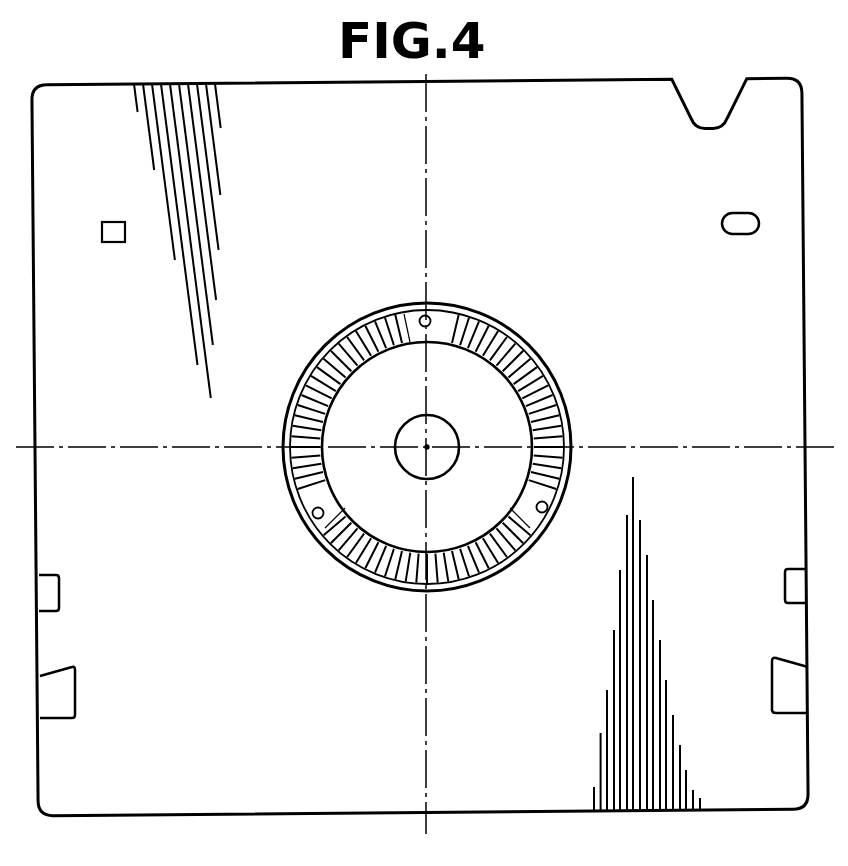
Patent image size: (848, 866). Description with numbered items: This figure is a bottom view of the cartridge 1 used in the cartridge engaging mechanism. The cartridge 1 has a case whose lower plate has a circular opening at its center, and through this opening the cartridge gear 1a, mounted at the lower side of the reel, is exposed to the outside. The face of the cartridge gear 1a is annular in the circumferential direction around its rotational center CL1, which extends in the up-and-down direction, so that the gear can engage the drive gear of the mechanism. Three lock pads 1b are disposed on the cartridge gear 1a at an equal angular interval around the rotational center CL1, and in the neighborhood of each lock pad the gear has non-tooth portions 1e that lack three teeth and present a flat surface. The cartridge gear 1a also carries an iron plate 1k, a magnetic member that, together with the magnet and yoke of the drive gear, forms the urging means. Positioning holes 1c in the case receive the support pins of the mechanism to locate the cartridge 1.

The cartridge 1 is at (712, 70).
The cartridge gear 1a is at (348, 335).
The lock pads 1b is at (413, 317).
The positioning holes 1c is at (107, 232).
The non-tooth portions 1e is at (441, 318).
The iron plate 1k is at (493, 412).
The rotational center CL1 is at (427, 449).